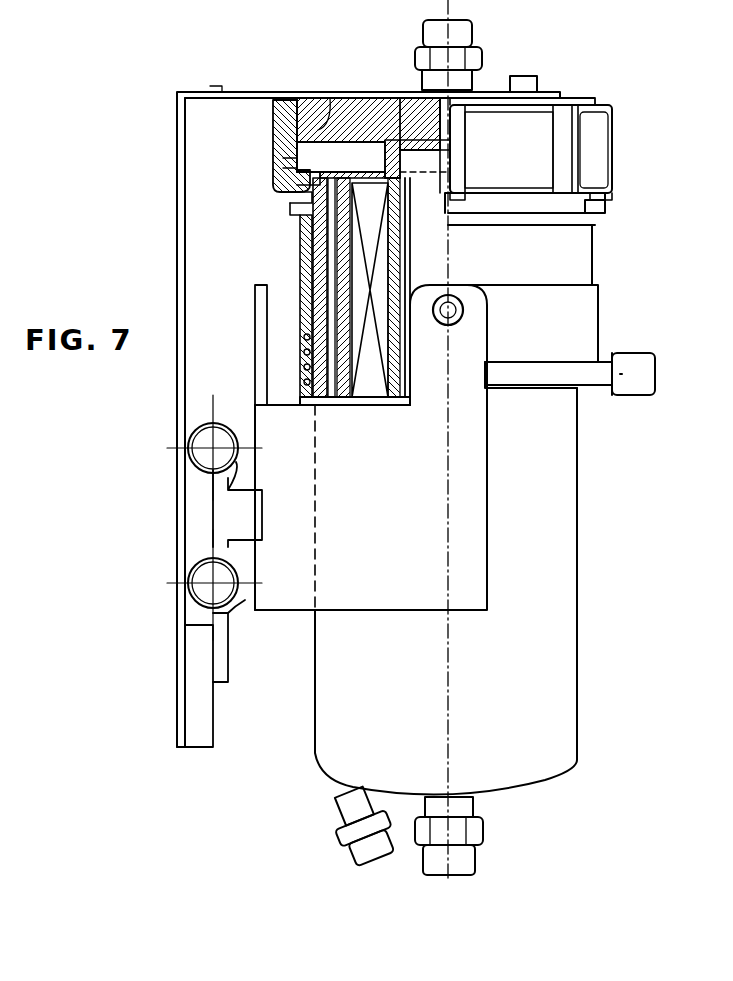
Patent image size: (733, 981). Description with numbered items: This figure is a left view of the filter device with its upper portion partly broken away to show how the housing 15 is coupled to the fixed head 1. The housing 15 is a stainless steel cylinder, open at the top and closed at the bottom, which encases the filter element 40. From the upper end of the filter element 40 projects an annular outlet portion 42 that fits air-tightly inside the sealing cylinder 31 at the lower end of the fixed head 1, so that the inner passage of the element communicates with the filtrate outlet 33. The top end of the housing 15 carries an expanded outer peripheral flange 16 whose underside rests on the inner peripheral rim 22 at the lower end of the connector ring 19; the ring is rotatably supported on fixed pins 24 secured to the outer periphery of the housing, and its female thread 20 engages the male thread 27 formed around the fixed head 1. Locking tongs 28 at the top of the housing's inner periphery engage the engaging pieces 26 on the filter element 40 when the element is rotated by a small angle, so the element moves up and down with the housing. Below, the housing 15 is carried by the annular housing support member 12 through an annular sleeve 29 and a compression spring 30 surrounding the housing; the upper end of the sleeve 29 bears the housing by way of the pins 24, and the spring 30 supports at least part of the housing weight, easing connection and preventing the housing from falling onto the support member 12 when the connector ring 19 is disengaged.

The fixed head 1 is at (352, 106).
The housing support member 12 is at (293, 332).
The housing 15 is at (313, 703).
The outer peripheral flange 16 is at (300, 172).
The connector ring 19 is at (272, 130).
The female thread 20 is at (317, 120).
The inner peripheral rim 22 is at (290, 202).
The fixed pins 24 is at (292, 215).
The engaging pieces 26 is at (283, 168).
The male thread 27 is at (282, 128).
The locking tongs 28 is at (280, 158).
The annular sleeve 29 is at (302, 268).
The compression spring 30 is at (297, 352).
The sealing cylinder 31 is at (385, 160).
The filtrate outlet 33 is at (404, 100).
The filter element 40 is at (410, 249).
The annular outlet portion 42 is at (445, 162).